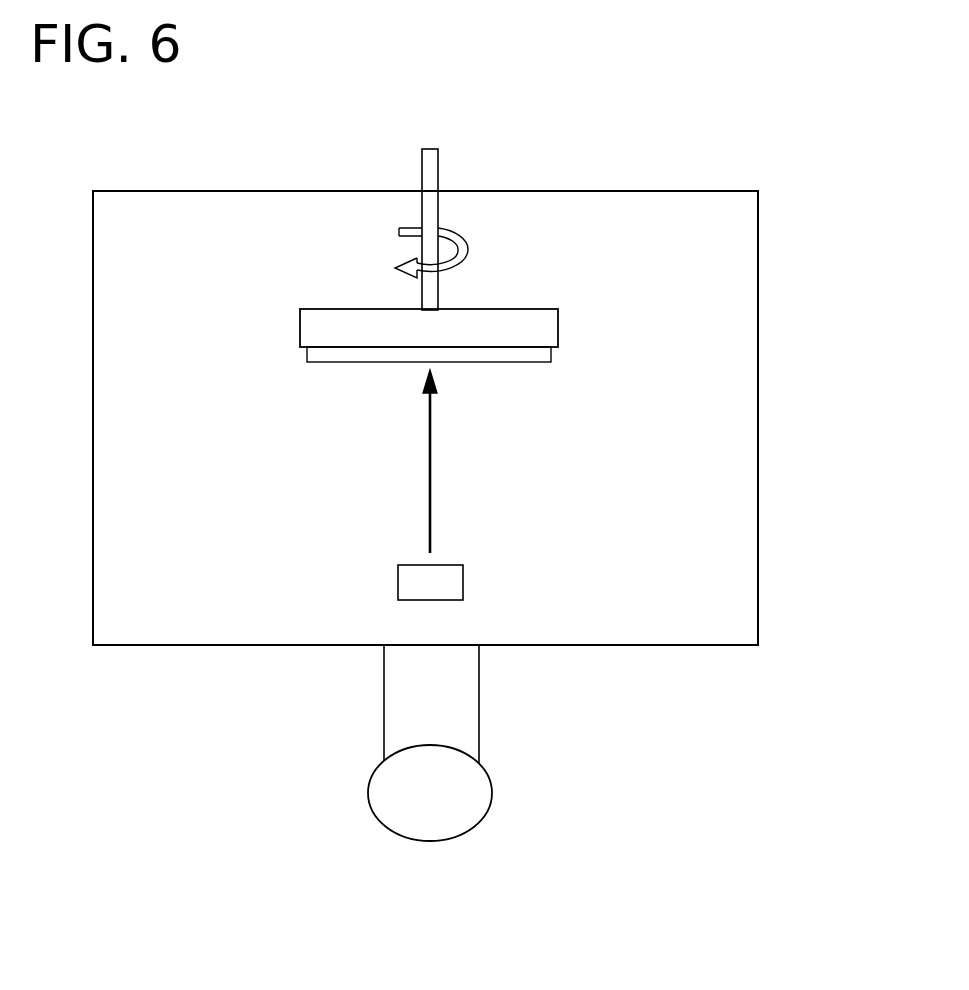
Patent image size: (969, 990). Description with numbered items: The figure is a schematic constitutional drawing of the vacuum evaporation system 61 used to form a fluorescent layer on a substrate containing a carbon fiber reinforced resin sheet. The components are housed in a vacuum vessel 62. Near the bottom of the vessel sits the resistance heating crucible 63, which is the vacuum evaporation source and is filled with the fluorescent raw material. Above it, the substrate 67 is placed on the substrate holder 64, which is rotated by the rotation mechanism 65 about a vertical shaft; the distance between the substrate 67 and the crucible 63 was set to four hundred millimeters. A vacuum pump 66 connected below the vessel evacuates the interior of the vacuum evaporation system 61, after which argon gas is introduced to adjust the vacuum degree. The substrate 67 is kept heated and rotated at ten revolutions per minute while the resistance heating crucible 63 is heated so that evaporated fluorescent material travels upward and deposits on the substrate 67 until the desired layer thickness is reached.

The vacuum evaporation system 61 is at (594, 137).
The vacuum vessel 62 is at (758, 243).
The resistance heating crucible 63 is at (463, 582).
The substrate holder 64 is at (531, 309).
The rotation mechanism 65 is at (452, 213).
The vacuum pump 66 is at (492, 793).
The substrate 67 is at (551, 356).